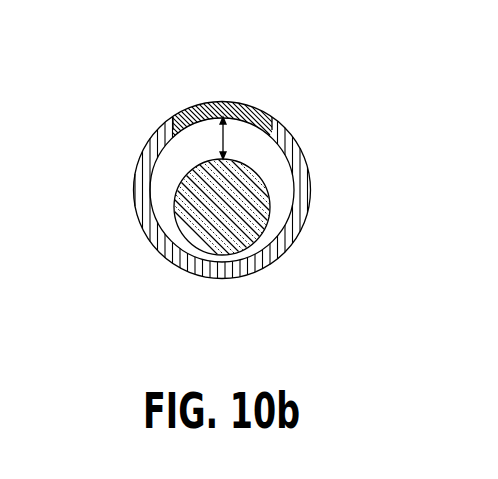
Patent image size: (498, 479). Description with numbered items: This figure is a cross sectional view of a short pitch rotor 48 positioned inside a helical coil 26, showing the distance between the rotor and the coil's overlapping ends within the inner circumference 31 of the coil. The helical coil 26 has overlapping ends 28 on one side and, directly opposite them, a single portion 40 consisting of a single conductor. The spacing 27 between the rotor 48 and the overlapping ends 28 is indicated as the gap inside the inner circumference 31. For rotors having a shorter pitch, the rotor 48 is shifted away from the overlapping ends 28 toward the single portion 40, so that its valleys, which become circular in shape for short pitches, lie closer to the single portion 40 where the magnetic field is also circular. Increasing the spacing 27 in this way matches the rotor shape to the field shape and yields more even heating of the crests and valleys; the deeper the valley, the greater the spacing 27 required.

The helical coil 26 is at (150, 145).
The spacing 27 is at (223, 140).
The overlapping ends 28 is at (274, 120).
The inner circumference 31 is at (155, 214).
The single portion 40 is at (232, 278).
The short pitch rotor 48 is at (237, 213).